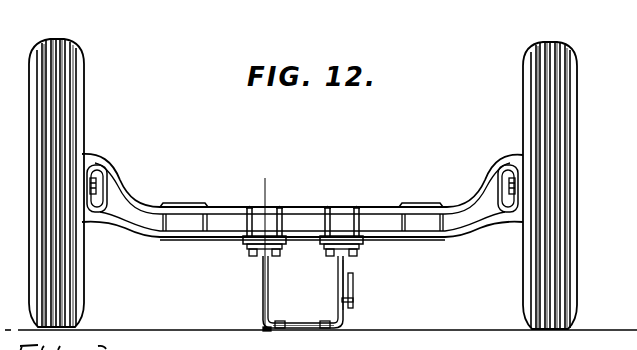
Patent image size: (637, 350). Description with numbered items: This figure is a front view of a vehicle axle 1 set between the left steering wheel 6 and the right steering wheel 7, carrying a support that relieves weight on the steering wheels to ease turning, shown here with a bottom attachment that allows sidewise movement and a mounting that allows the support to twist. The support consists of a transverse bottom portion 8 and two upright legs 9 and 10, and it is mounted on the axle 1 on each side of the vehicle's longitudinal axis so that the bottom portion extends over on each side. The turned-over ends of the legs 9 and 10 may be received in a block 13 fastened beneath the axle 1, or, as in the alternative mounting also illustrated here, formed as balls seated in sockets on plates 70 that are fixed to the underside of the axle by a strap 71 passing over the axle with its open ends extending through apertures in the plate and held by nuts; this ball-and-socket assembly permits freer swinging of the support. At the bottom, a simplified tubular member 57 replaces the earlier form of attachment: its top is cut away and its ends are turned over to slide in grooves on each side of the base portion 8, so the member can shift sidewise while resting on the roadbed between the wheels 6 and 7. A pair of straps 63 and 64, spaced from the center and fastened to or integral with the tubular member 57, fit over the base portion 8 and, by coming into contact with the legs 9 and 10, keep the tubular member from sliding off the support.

The axle 1 is at (300, 220).
The left wheel 6 is at (82, 105).
The right wheel 7 is at (565, 123).
The transverse bottom portion 8 is at (302, 323).
The upright leg 9 is at (263, 288).
The upright leg 10 is at (341, 277).
The block 13 is at (274, 188).
The tubular member 57 is at (277, 330).
The strap 63 is at (280, 321).
The strap 64 is at (330, 323).
The plate 70 is at (243, 243).
The strap 71 is at (278, 219).